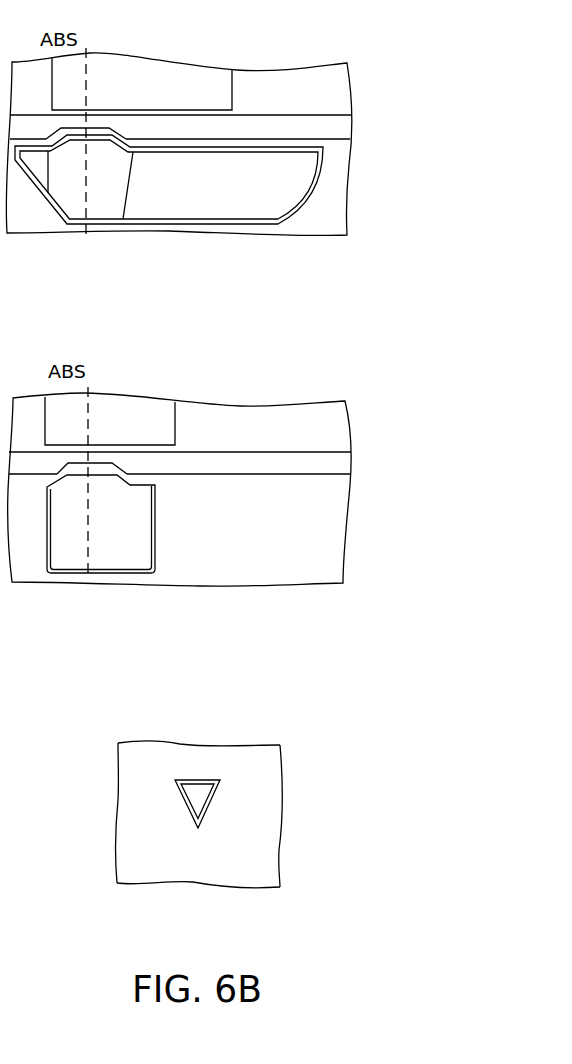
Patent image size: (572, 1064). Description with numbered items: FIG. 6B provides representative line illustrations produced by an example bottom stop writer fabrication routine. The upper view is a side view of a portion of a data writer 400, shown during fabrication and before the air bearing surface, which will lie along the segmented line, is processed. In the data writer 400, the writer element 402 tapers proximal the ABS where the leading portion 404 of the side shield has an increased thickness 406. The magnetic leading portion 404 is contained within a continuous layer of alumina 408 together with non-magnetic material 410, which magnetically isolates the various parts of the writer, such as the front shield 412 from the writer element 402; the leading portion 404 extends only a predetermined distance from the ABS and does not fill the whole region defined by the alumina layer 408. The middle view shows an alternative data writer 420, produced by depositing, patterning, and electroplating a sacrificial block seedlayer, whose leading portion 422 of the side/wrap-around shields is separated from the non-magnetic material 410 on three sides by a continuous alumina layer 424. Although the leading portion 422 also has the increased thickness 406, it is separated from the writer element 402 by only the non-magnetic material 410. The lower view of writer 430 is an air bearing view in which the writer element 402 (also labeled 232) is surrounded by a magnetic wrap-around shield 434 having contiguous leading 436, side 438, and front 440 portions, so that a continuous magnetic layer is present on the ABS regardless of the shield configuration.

The write pole tip 232 is at (185, 805).
The data writer 400 is at (322, 55).
The writer element 402 is at (256, 123).
The leading portion 404 is at (124, 214).
The increased thickness 406 is at (98, 141).
The alumina layer 408 is at (163, 153).
The non-magnetic material 410 is at (335, 103).
The front shield 412 is at (219, 98).
The data writer 420 is at (322, 398).
The leading portion 422 is at (140, 561).
The alumina layer 424 is at (157, 492).
The writer 430 is at (199, 801).
The magnetic wrap-around shield 434 is at (264, 875).
The leading portion 436 is at (193, 883).
The side portion 438 is at (118, 798).
The front portion 440 is at (188, 744).